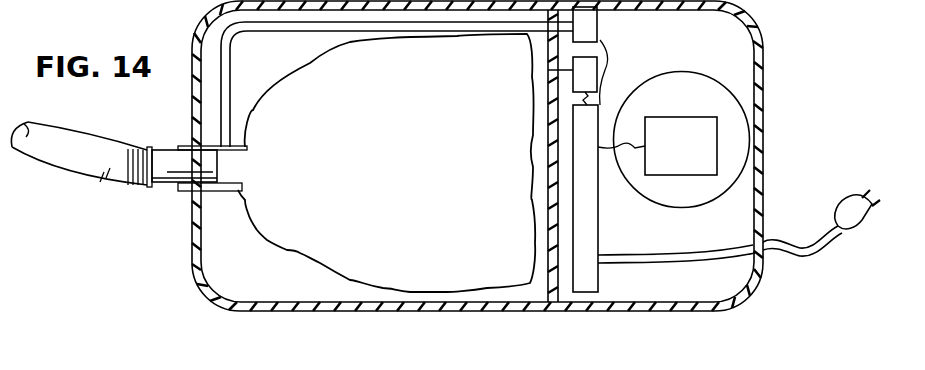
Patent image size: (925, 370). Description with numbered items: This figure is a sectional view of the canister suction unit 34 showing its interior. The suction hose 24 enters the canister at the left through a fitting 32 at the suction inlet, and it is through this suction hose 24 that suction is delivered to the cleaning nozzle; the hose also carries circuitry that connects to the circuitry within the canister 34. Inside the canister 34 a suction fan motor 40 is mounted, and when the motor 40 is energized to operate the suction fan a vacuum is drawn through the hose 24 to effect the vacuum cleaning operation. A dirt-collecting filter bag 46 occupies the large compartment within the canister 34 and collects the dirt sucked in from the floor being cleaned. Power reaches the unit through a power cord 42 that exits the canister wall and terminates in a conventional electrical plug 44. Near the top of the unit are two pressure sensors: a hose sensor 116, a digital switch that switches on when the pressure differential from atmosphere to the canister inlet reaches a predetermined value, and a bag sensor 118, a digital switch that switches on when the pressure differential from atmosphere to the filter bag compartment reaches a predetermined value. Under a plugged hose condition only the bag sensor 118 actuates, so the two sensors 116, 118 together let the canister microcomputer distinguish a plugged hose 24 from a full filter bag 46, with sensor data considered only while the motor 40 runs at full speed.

The suction hose 24 is at (72, 148).
The hose connector 32 is at (182, 146).
The canister suction unit 34 is at (250, 313).
The suction fan motor 40 is at (685, 72).
The power cord 42 is at (658, 260).
The electrical plug 44 is at (845, 208).
The dirt-collecting filter bag 46 is at (290, 250).
The hose sensor 116 is at (593, 23).
The bag sensor 118 is at (587, 72).